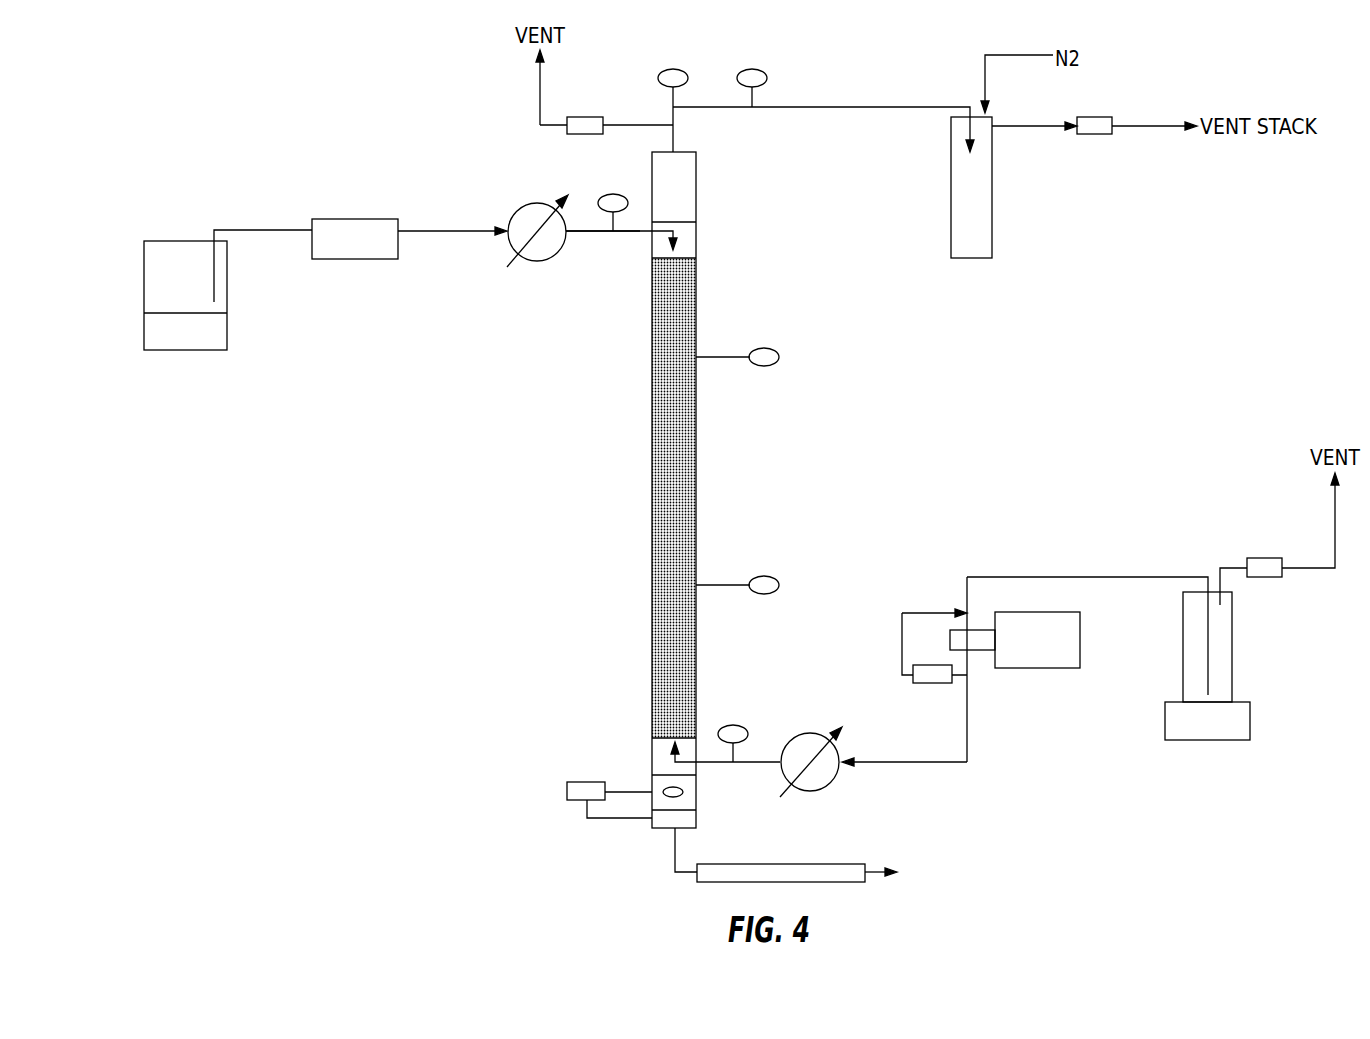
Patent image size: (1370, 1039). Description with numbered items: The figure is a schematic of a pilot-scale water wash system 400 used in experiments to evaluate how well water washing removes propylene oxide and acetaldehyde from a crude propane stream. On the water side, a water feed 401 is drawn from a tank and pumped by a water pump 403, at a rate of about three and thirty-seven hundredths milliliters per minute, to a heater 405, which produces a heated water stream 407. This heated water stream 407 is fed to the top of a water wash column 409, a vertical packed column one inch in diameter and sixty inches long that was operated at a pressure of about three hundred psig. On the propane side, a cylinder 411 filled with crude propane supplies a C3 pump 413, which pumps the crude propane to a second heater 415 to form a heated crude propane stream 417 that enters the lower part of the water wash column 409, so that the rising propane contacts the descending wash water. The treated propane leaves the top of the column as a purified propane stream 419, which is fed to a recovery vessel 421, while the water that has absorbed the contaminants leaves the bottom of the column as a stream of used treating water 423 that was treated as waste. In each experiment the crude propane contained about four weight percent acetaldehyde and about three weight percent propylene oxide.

The system 400 is at (264, 80).
The water feed 401 is at (184, 241).
The water pump 403 is at (355, 219).
The heater 405 is at (532, 203).
The heated water stream 407 is at (588, 233).
The water wash column 409 is at (650, 488).
The cylinder 411 is at (1233, 645).
The C3 pump 413 is at (1035, 668).
The second heater 415 is at (808, 733).
The heated crude propane stream 417 is at (750, 762).
The purified propane stream 419 is at (842, 105).
The recovery vessel 421 is at (995, 220).
The stream of used treating water 423 is at (877, 870).